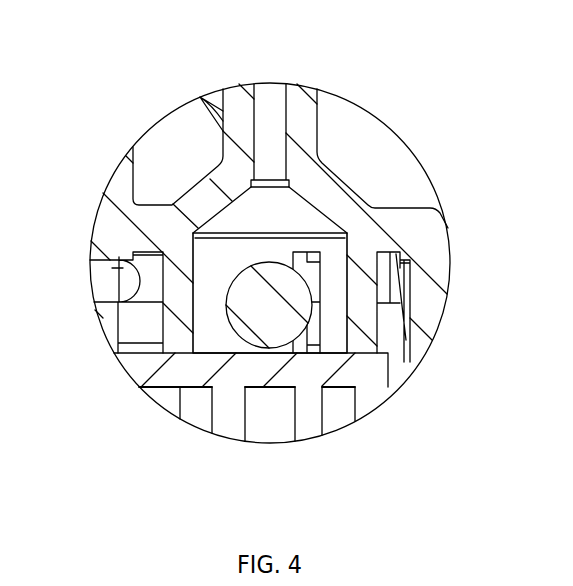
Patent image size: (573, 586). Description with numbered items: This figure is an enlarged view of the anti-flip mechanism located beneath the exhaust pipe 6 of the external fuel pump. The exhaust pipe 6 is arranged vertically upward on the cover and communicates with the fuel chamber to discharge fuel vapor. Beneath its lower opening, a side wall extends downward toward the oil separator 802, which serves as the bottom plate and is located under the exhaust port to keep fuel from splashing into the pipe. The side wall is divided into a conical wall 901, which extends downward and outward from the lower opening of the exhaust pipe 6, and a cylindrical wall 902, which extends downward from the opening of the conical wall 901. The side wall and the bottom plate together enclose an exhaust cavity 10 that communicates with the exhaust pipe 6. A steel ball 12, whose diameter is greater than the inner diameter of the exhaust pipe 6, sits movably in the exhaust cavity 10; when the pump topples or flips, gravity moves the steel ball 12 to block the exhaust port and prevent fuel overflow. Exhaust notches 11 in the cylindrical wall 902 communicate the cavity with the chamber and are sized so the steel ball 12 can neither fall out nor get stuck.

The exhaust pipe 6 is at (273, 120).
The conical wall 901 is at (335, 198).
The exhaust cavity 10 is at (223, 278).
The exhaust notches 11 is at (315, 275).
The steel ball 12 is at (290, 323).
The cylindrical wall 902 is at (368, 293).
The oil separator 802 is at (257, 365).